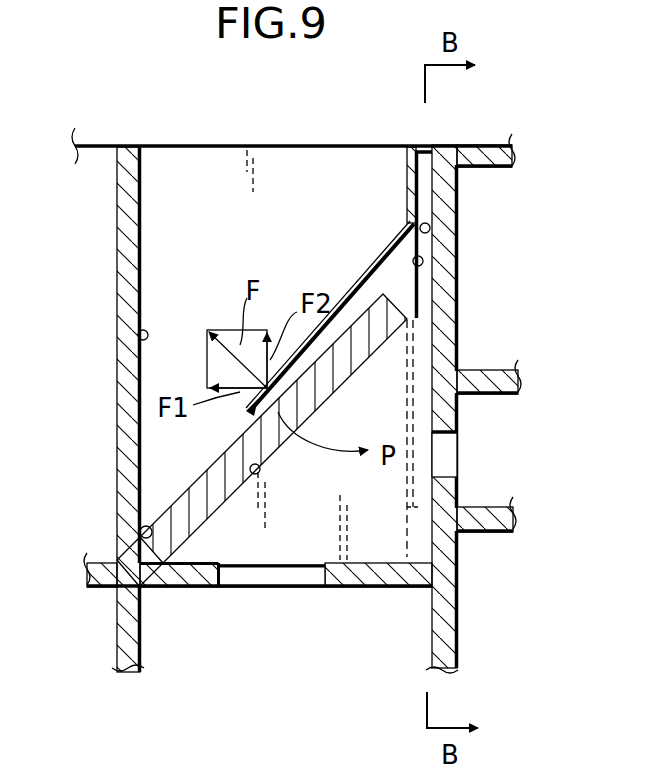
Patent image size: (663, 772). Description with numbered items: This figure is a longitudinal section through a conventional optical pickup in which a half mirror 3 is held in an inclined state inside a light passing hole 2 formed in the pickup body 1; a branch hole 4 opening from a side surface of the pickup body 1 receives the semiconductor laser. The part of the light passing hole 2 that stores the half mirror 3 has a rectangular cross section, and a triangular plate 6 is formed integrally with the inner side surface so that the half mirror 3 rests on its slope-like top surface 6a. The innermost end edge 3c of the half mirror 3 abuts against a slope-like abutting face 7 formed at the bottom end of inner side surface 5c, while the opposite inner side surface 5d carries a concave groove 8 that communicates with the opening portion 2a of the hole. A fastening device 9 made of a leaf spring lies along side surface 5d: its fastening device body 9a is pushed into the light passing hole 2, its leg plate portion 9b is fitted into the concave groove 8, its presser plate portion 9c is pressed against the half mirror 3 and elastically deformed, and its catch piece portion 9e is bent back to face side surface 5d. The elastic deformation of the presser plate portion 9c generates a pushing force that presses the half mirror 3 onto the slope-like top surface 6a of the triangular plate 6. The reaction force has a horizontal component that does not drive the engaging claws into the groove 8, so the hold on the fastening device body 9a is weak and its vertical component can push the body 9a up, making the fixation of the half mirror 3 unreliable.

The pickup body 1 is at (117, 222).
The light passing hole 2 is at (160, 292).
The opening portion 2a is at (214, 145).
The half mirror 3 is at (200, 496).
The innermost end edge 3c is at (143, 589).
The branch hole 4 is at (457, 453).
The inner side surface 5c is at (138, 336).
The inner side surface 5d is at (430, 227).
The triangular plate 6 is at (363, 533).
The slope-like top surface 6a is at (260, 471).
The slope-like abutting face 7 is at (140, 531).
The concave groove 8 is at (413, 261).
The fastening device 9 is at (339, 321).
The fastening device body 9a is at (410, 185).
The leg plate portion 9b is at (405, 427).
The presser plate portion 9c is at (378, 262).
The catch piece portion 9e is at (418, 148).